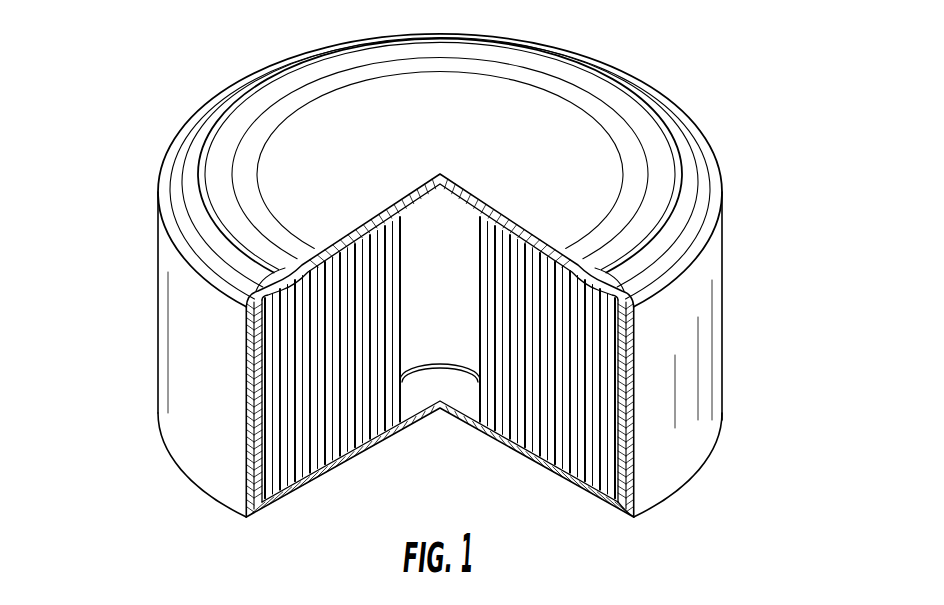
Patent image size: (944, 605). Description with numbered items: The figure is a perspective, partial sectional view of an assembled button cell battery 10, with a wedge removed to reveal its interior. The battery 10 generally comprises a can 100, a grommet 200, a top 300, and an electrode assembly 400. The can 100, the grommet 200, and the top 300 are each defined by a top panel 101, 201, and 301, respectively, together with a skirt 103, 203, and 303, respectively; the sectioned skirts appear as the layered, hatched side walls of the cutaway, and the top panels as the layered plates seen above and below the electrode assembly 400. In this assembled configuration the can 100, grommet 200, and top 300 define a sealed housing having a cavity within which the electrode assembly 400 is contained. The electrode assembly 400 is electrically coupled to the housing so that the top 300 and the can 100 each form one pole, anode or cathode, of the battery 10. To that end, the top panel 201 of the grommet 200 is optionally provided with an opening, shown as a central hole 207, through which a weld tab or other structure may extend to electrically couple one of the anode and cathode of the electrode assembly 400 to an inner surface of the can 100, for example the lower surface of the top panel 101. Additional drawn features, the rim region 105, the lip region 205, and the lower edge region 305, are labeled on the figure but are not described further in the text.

The button cell battery 10 is at (792, 140).
The can 100 is at (140, 314).
The top panel 101 is at (355, 457).
The skirt 103 is at (675, 442).
The can rim 105 is at (660, 225).
The grommet 200 is at (285, 246).
The top panel 201 is at (302, 457).
The skirt 203 is at (625, 397).
The gasket upper lip 205 is at (625, 287).
The central hole 207 is at (424, 371).
The top 300 is at (486, 94).
The top panel 301 is at (610, 140).
The skirt 303 is at (250, 378).
The cap bottom edge 305 is at (618, 518).
The electrode assembly 400 is at (572, 433).